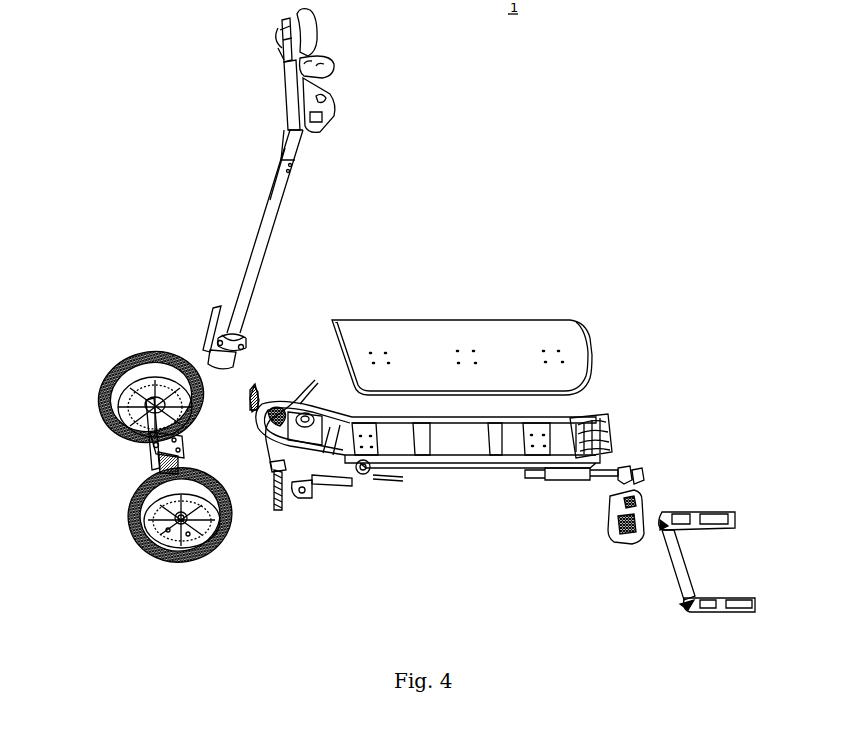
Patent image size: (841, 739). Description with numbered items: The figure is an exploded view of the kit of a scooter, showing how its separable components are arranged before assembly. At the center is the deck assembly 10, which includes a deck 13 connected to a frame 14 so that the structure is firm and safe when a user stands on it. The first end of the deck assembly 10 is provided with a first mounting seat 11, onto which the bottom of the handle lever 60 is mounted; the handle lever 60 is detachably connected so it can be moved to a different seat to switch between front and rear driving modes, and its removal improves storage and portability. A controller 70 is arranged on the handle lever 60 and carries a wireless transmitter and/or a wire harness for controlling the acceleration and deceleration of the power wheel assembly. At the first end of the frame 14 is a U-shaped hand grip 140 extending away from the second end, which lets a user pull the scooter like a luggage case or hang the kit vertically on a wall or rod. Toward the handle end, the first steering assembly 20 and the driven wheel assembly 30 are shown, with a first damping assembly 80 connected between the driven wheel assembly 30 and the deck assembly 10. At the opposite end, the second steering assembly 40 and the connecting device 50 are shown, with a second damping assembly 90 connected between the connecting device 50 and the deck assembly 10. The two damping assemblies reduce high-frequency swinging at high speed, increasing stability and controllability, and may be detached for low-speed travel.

The deck assembly 10 is at (512, 500).
The first mounting seat 11 is at (276, 470).
The deck 13 is at (445, 332).
The frame 14 is at (457, 464).
The first steering assembly 20 is at (145, 456).
The driven wheel assembly 30 is at (212, 556).
The second steering assembly 40 is at (620, 550).
The connecting device 50 is at (708, 622).
The handle lever 60 is at (257, 250).
The controller 70 is at (342, 56).
The first damping assembly 80 is at (347, 472).
The second damping assembly 90 is at (583, 482).
The hand grip 140 is at (252, 404).